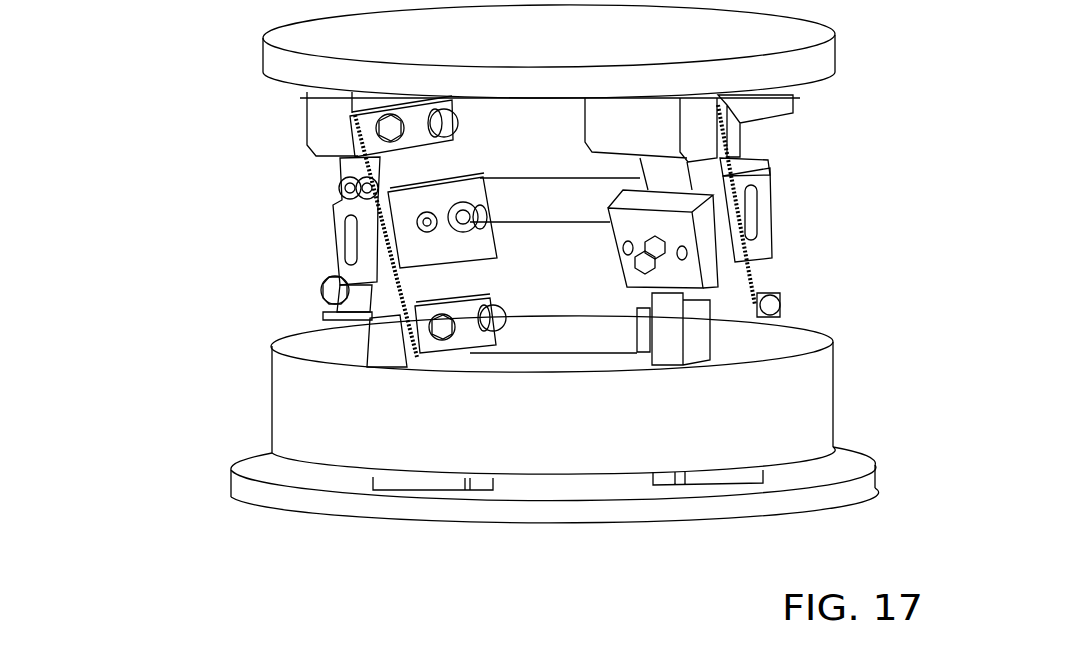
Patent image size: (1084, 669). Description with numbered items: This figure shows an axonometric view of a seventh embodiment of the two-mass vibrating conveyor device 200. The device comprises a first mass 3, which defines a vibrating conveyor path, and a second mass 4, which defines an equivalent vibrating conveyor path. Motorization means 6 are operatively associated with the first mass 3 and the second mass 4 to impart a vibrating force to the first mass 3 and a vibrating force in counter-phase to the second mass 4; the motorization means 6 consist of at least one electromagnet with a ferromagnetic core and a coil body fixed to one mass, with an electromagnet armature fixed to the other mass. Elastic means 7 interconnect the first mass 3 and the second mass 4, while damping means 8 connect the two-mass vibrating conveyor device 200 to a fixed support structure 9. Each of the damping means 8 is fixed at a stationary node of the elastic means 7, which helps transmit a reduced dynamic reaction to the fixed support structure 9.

The two-mass vibrating conveyor device 200 is at (180, 139).
The first mass 3 is at (712, 37).
The second mass 4 is at (685, 420).
The motorization means 6 is at (540, 207).
The elastic means 7 is at (420, 284).
The damping means 8 is at (310, 187).
The fixed support structure 9 is at (410, 511).